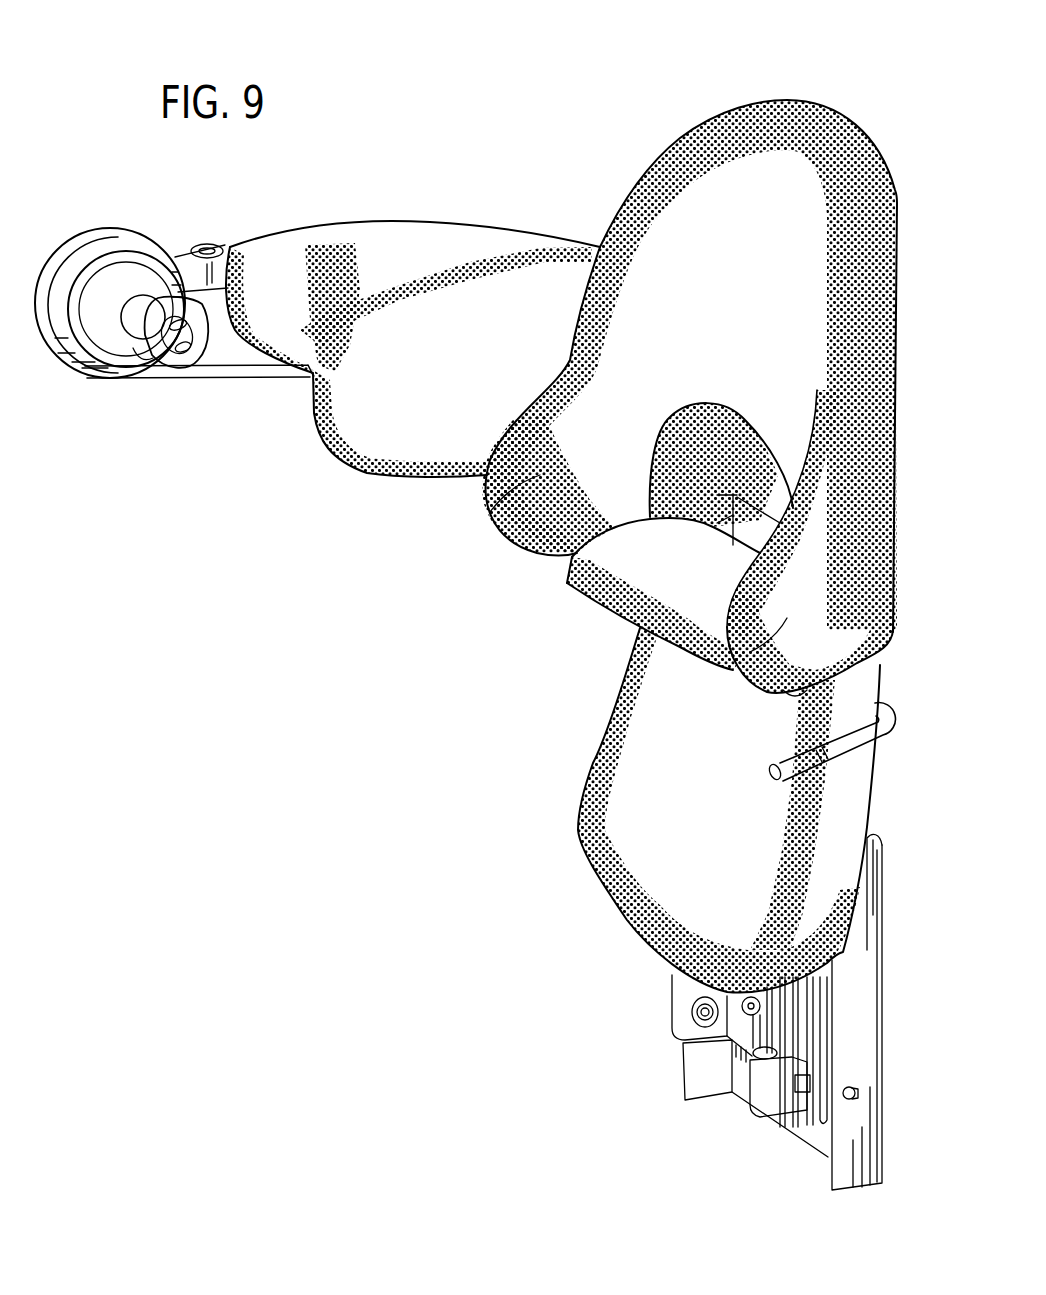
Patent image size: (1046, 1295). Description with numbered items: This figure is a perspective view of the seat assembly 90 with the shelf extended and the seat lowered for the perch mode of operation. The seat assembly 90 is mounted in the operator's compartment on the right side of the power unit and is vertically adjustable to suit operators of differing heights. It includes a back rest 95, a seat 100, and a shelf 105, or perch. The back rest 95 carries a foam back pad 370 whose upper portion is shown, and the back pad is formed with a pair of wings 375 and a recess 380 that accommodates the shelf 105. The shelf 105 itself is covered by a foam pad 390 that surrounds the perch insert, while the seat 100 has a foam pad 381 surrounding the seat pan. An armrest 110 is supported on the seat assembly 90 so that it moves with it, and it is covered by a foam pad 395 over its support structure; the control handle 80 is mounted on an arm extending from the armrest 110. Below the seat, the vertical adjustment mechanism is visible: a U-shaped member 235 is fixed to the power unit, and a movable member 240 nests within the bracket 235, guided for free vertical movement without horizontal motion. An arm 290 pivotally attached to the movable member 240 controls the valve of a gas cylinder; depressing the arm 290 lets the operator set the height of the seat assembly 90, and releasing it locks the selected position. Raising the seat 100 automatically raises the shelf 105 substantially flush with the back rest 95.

The control handle 80 is at (138, 307).
The seat assembly 90 is at (520, 660).
The back rest 95 is at (664, 230).
The seat 100 is at (620, 790).
The shelf 105 is at (585, 586).
The armrest 110 is at (373, 241).
The U-shaped member 235 is at (693, 1067).
The movable member 240 is at (682, 995).
The arm 290 is at (785, 757).
The foam back pad 370 is at (763, 165).
The wings 375 is at (490, 513).
The recess 380 is at (670, 420).
The foam pad 381 is at (643, 873).
The foam pad 390 is at (635, 596).
The foam pad 395 is at (375, 383).